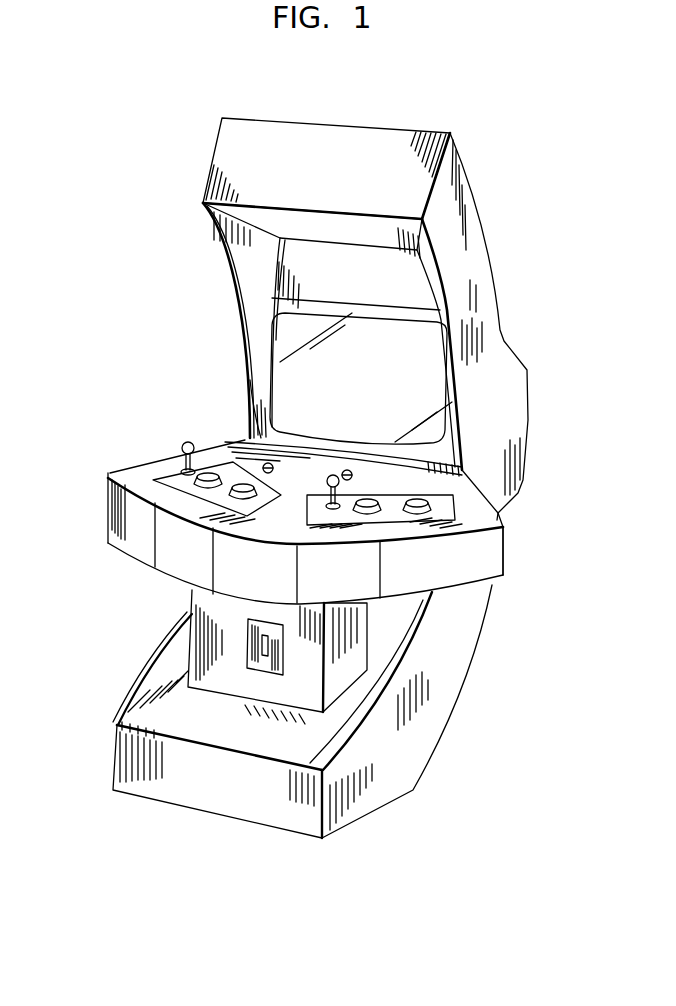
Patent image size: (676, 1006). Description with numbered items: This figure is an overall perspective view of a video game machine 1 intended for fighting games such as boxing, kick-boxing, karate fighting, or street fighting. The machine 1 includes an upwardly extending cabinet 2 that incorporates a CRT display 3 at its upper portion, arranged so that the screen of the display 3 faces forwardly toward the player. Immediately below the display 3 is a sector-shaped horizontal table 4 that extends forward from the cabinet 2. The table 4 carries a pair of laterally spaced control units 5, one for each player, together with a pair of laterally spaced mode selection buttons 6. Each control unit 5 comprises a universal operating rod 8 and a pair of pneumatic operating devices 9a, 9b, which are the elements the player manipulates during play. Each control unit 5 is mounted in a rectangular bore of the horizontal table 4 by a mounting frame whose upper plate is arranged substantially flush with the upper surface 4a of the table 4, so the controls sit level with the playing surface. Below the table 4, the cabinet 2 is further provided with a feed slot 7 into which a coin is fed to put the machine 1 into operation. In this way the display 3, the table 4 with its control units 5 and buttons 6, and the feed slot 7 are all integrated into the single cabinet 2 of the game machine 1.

The video game machine 1 is at (309, 476).
The cabinet 2 is at (493, 331).
The CRT display 3 is at (297, 338).
The horizontal table 4 is at (473, 500).
The upper surface of the horizontal table 4a is at (500, 517).
The control unit 5 is at (170, 467).
The mode selection button 6 is at (263, 466).
The feed slot 7 is at (247, 648).
The universal operating rod 8 is at (187, 442).
The pneumatic operating device 9a is at (203, 486).
The pneumatic operating device 9b is at (237, 496).